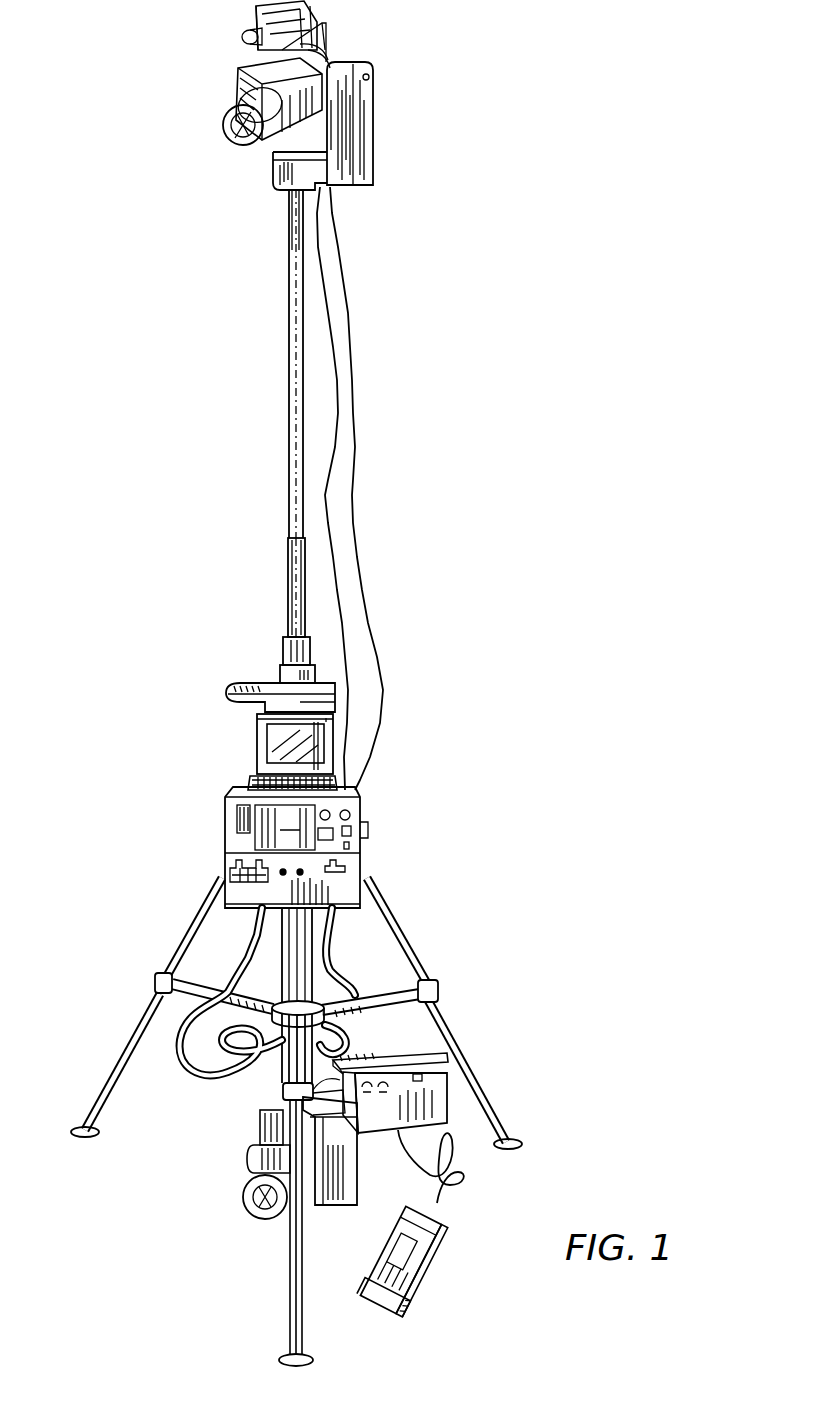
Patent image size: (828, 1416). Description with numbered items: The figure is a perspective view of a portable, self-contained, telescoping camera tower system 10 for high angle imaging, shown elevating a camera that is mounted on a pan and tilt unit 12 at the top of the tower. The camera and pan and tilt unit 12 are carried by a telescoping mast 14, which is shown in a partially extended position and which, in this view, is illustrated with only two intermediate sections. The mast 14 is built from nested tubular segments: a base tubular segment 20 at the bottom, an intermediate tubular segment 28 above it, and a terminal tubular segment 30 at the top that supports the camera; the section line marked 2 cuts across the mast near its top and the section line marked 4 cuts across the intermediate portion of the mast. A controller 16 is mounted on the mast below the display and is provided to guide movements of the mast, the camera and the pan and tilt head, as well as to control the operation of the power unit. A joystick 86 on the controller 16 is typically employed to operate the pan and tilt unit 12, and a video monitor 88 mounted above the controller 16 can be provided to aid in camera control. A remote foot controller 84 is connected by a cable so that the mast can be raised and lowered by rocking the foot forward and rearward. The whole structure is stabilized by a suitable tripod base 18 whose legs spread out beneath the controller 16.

The section line 2- 2 is at (426, 215).
The section line 4- 4 is at (313, 493).
The portable, self-contained, telescoping camera tower system 10 is at (392, 311).
The pan and tilt unit 12 is at (382, 97).
The mast 14 is at (284, 558).
The controller 16 is at (368, 806).
The tripod base 18 is at (484, 1071).
The base tubular segment 20 is at (288, 676).
The intermediate tubular segment 28 is at (287, 588).
The terminal tubular segment 30 is at (294, 402).
The remote control unit 84 is at (442, 1243).
The joystick 86 is at (347, 866).
The video monitor 88 is at (288, 740).